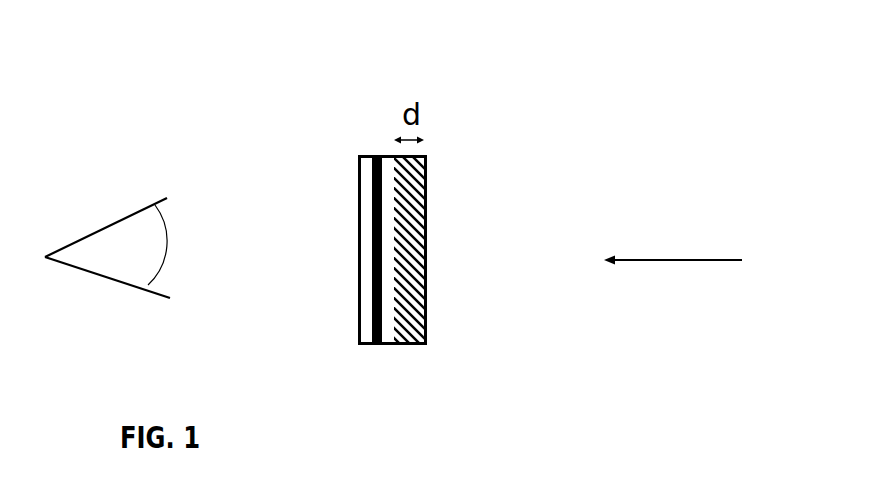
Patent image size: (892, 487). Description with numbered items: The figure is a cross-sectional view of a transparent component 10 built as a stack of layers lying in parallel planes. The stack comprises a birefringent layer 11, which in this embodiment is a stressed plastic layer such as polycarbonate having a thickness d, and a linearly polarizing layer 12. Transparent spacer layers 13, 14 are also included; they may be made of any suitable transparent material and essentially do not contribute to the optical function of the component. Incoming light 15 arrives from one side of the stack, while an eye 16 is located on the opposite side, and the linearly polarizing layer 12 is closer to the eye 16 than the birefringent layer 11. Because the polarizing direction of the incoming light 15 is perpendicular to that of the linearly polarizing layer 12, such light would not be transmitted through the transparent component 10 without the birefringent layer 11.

The transparent component 10 is at (449, 112).
The birefringent layer 11 is at (403, 297).
The linearly polarizing layer 12 is at (370, 297).
The transparent spacer layer 13 is at (365, 220).
The transparent spacer layer 14 is at (388, 233).
The incoming light 15 is at (687, 260).
The eye 16 is at (97, 227).